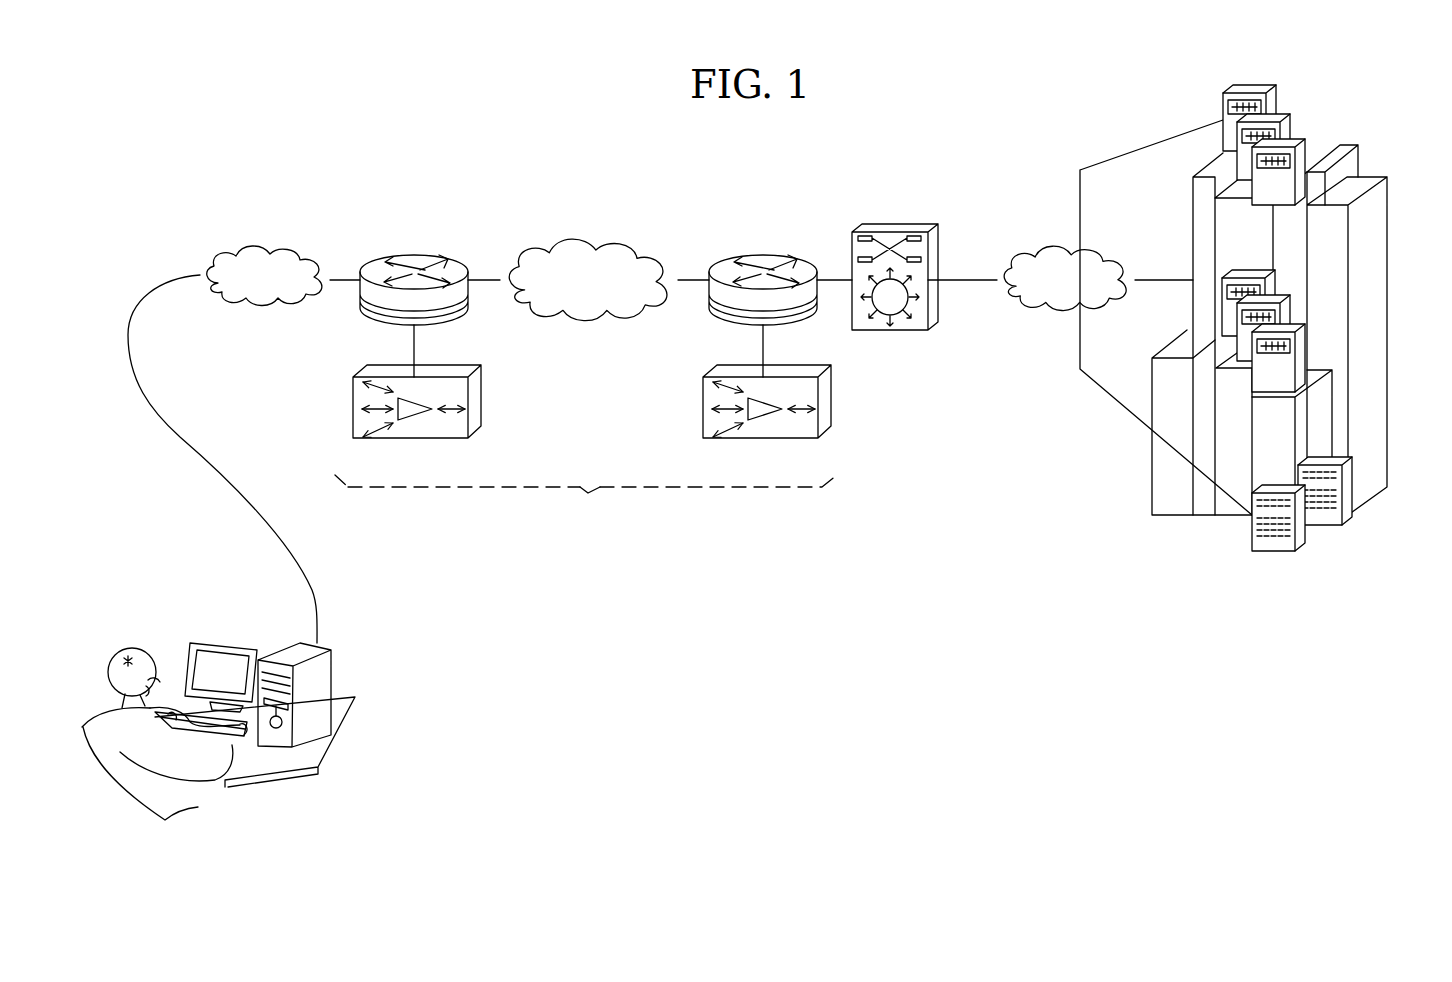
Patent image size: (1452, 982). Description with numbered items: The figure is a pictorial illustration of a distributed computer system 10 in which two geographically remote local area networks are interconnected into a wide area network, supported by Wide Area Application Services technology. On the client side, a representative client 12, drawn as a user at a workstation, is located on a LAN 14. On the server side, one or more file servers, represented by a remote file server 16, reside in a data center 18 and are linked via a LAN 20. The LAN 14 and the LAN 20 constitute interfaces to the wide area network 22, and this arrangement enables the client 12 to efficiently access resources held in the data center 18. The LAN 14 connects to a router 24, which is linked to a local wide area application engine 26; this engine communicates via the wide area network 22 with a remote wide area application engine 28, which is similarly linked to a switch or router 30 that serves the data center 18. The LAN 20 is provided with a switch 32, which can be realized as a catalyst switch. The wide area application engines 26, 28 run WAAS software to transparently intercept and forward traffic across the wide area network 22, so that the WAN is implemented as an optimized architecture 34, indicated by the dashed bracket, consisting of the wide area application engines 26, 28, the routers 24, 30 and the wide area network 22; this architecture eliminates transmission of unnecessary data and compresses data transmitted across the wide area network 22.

The system 10 is at (487, 144).
The client 12 is at (334, 650).
The LAN 14 is at (318, 253).
The remote file server 16 is at (1270, 548).
The data center 18 is at (1262, 333).
The LAN 20 is at (1118, 252).
The wide area network 22 is at (660, 240).
The router 24 is at (437, 254).
The local wide area application engine 26 is at (383, 375).
The remote wide area application engine 28 is at (735, 375).
The switch or router 30 is at (788, 255).
The switch 32 is at (880, 228).
The optimized architecture 34 is at (592, 512).